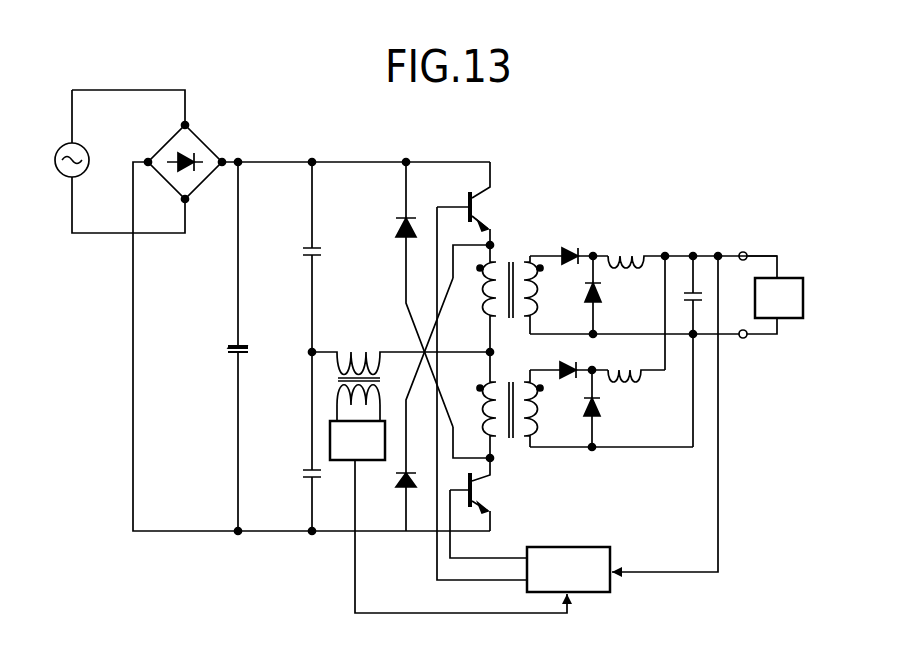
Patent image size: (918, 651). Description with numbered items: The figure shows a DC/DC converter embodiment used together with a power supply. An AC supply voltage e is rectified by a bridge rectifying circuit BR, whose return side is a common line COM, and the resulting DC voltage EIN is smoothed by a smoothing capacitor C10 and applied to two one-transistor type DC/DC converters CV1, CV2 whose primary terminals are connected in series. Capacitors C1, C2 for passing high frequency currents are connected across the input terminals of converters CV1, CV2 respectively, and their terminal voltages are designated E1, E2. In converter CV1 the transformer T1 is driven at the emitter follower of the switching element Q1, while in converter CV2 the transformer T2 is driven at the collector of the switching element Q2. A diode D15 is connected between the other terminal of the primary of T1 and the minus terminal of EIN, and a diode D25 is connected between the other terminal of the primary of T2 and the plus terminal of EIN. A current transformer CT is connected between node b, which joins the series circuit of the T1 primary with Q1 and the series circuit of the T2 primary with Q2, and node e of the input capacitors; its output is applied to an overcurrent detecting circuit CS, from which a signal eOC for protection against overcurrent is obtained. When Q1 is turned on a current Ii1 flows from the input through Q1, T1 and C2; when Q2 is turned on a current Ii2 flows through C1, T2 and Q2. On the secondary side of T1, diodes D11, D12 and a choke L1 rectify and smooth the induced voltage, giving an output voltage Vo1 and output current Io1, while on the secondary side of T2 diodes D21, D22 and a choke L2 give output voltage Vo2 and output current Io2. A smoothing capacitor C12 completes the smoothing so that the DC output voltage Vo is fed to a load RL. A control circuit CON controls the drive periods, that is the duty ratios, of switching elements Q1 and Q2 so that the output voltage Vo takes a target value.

The bridge rectifying circuit BR is at (198, 148).
The common line COM is at (311, 346).
The AC supply voltage e is at (105, 96).
The DC input voltage EIN is at (235, 526).
The smoothing capacitor C10 is at (228, 346).
The terminal voltage of capacitor C1 E1 is at (278, 166).
The terminal voltage of capacitor C2 E2 is at (278, 355).
The capacitor C1 is at (324, 257).
The capacitor C2 is at (325, 441).
The current transformer CT is at (401, 386).
The overcurrent detecting circuit CS is at (357, 440).
The overcurrent protection signal eOC is at (461, 537).
The diode D25 is at (410, 294).
The diode D15 is at (410, 404).
The input current Ii1 is at (435, 152).
The input current Ii2 is at (468, 368).
The switching element Q1 is at (482, 371).
The switching element Q2 is at (488, 508).
The node b is at (476, 341).
The transformer T1 is at (510, 296).
The transformer T2 is at (510, 405).
The first converter CV1 is at (518, 238).
The second converter CV2 is at (511, 448).
The control circuit CON is at (622, 424).
The diode D11 is at (569, 243).
The diode D12 is at (577, 295).
The choke L1 is at (692, 273).
The output current of converter CV1 Io1 is at (613, 242).
The output voltage of converter CV1 Vo1 is at (652, 260).
The smoothing capacitor C12 is at (682, 290).
The load RL is at (771, 295).
The output voltage Vo is at (737, 261).
The diode D21 is at (569, 359).
The diode D22 is at (576, 408).
The choke L2 is at (636, 385).
The output current of converter CV2 Io2 is at (610, 354).
The output voltage of converter CV2 Vo2 is at (652, 374).